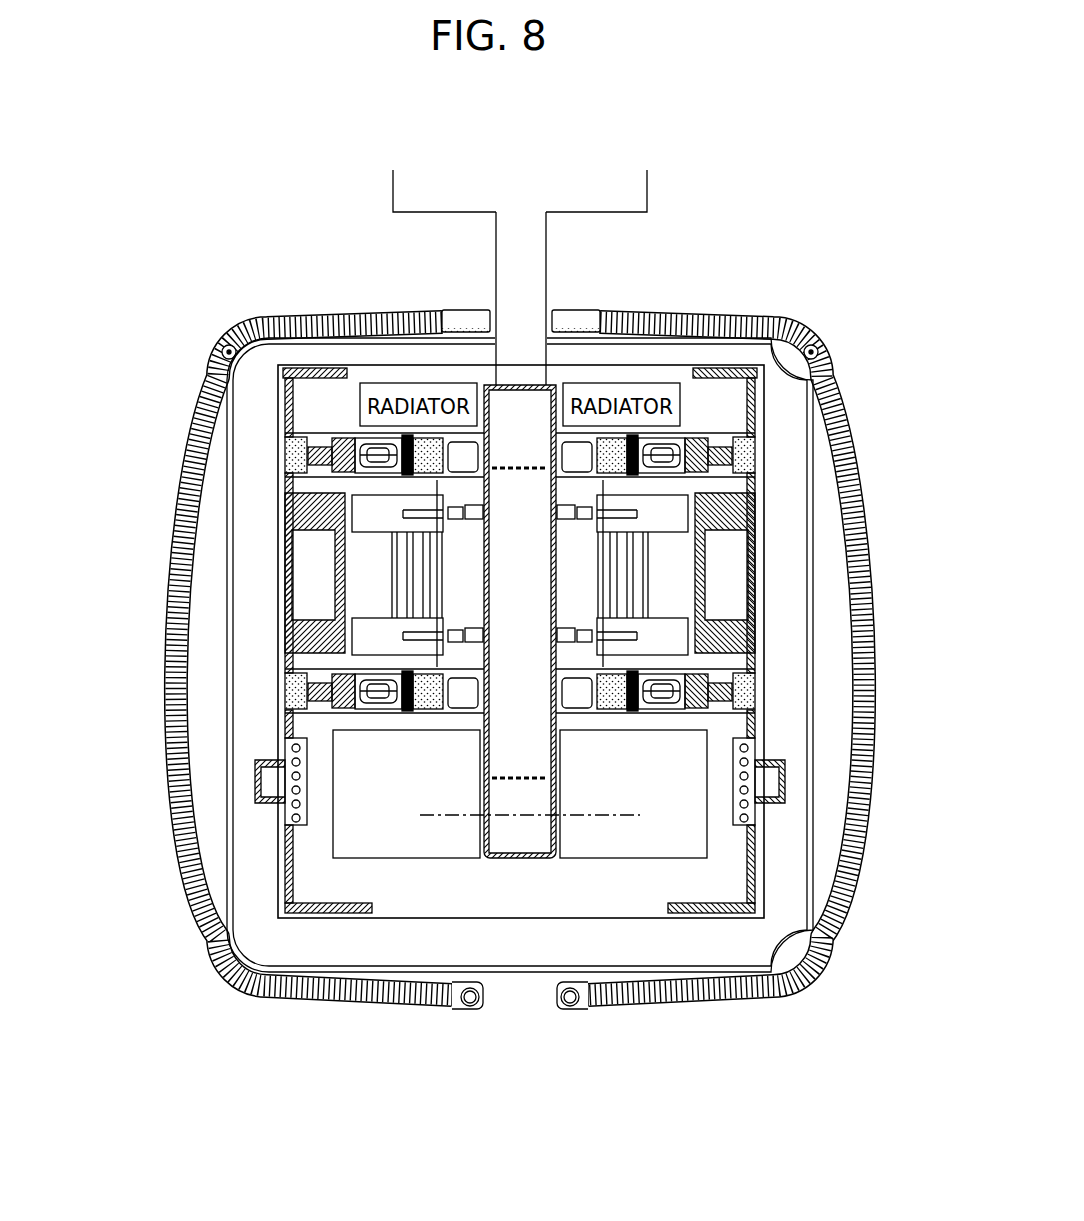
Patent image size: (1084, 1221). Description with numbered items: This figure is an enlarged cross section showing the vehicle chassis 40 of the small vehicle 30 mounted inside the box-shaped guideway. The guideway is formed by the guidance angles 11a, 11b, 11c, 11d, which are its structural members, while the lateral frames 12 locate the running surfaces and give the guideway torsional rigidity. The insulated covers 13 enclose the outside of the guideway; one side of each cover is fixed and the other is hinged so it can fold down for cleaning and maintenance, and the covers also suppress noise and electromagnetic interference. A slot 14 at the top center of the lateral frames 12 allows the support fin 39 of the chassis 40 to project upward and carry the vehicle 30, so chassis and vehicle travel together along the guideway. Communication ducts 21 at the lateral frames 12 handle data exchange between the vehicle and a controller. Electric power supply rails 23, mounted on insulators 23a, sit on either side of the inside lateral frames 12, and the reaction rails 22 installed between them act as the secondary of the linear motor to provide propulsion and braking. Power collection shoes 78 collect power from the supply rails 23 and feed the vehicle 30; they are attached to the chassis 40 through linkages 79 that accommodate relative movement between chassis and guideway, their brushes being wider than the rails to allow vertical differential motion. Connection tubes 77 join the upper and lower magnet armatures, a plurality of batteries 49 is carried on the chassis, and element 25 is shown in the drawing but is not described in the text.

The guidance angle 11a is at (318, 368).
The guidance angle 11b is at (737, 368).
The guidance angle 11c is at (323, 913).
The guidance angle 11d is at (738, 913).
The lateral frame 12 is at (788, 914).
The cover 13 is at (176, 515).
The slot 14 is at (494, 318).
The communication duct 21 is at (287, 815).
The reaction rail 22 is at (284, 627).
The electric power supply rail 23 is at (300, 483).
The insulator 23a is at (287, 443).
The terminal 25 is at (571, 1008).
The small vehicle 30 is at (649, 192).
The support fin 39 is at (548, 268).
The vehicle chassis 40 is at (530, 621).
The batteries 49 is at (430, 843).
The connection tube 77 is at (392, 577).
The power collection shoe 78 is at (342, 437).
The linkage 79 is at (370, 437).